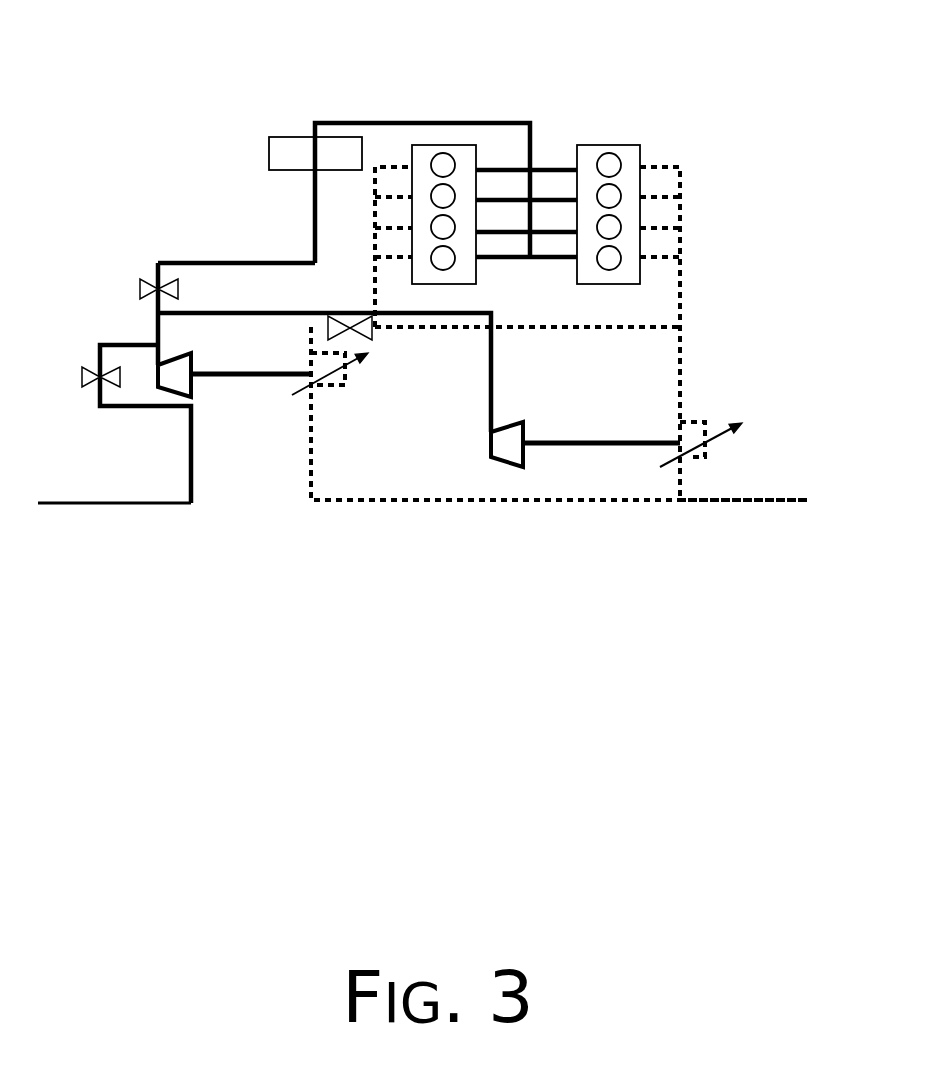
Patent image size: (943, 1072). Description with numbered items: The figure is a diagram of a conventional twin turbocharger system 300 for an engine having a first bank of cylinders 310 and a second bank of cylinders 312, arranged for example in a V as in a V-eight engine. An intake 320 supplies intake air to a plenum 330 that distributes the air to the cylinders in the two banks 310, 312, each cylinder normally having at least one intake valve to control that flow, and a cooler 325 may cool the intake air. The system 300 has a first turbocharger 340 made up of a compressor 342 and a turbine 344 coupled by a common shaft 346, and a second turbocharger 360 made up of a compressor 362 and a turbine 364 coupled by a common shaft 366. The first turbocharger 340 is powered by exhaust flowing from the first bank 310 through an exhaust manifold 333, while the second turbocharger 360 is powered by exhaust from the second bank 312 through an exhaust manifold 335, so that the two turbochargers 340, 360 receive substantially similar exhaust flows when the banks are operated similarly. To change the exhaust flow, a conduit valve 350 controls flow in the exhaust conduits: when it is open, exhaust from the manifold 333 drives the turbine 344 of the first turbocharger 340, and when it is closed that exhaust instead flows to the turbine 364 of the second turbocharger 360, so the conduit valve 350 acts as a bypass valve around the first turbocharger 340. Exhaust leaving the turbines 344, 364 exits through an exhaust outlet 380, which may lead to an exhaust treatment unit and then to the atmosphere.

The conventional twin turbocharger system 300 is at (650, 31).
The first bank of cylinders 310 is at (477, 284).
The second bank of cylinders 312 is at (616, 144).
The intake 320 is at (100, 505).
The cooler 325 is at (334, 166).
The plenum 330 is at (532, 137).
The exhaust manifold 333 is at (374, 258).
The exhaust manifold 335 is at (681, 252).
The first turbocharger 340 is at (281, 402).
The compressor 342 is at (192, 358).
The turbine 344 is at (320, 390).
The common shaft 346 is at (200, 378).
The conduit valve 350 is at (358, 337).
The second turbocharger 360 is at (556, 413).
The compressor 362 is at (524, 425).
The turbine 364 is at (706, 458).
The common shaft 366 is at (530, 447).
The exhaust outlet 380 is at (748, 503).